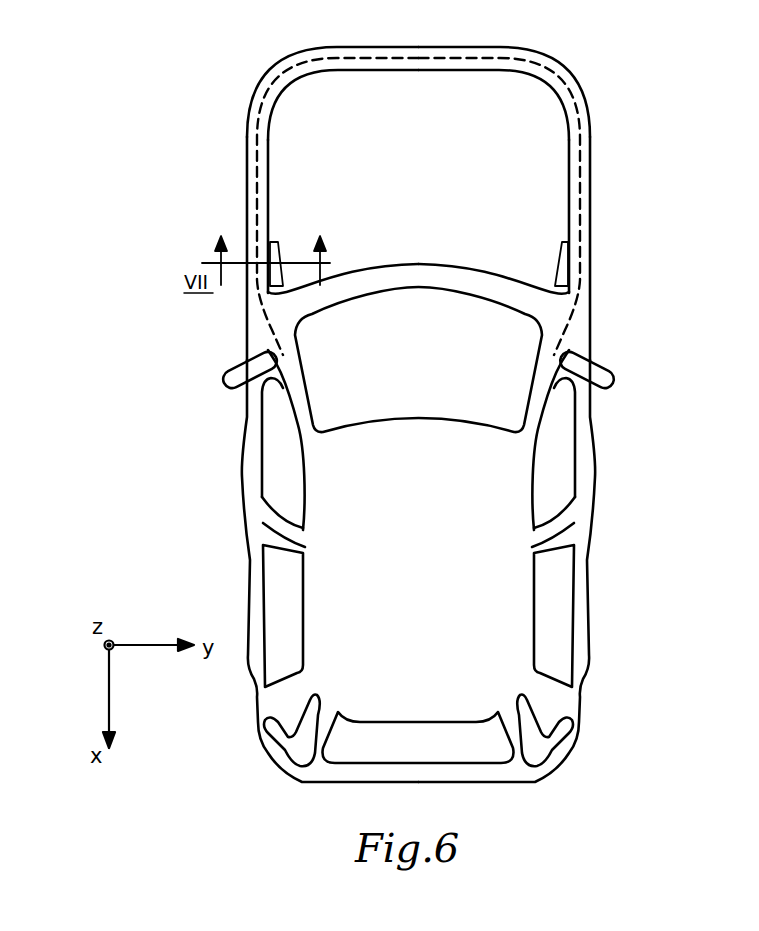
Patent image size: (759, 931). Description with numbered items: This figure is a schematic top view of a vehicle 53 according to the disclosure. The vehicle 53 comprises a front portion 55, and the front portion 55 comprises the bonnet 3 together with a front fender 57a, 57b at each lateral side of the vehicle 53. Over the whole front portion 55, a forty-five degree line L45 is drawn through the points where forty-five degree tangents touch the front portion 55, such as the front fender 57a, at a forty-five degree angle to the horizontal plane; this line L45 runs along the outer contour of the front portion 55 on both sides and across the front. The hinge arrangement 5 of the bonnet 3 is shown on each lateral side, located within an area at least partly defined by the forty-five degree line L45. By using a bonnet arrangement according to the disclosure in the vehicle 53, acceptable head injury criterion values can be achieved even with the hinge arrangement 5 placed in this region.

The bonnet 3 is at (426, 182).
The hinge arrangement 5 is at (277, 256).
The vehicle 53 is at (184, 76).
The front portion 55 is at (612, 142).
The front fender 57a is at (253, 204).
The front fender 57b is at (590, 180).
The 45 degree line L45 is at (257, 162).